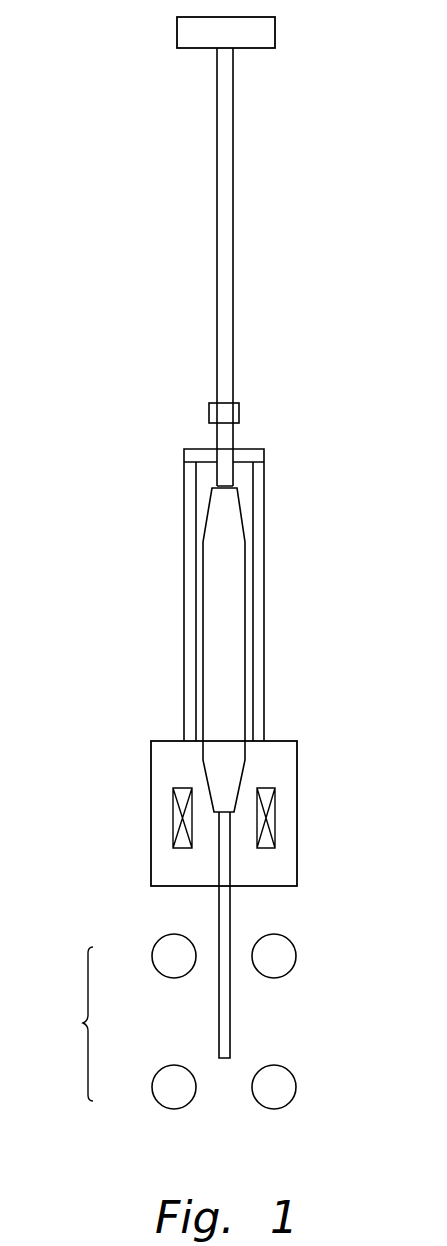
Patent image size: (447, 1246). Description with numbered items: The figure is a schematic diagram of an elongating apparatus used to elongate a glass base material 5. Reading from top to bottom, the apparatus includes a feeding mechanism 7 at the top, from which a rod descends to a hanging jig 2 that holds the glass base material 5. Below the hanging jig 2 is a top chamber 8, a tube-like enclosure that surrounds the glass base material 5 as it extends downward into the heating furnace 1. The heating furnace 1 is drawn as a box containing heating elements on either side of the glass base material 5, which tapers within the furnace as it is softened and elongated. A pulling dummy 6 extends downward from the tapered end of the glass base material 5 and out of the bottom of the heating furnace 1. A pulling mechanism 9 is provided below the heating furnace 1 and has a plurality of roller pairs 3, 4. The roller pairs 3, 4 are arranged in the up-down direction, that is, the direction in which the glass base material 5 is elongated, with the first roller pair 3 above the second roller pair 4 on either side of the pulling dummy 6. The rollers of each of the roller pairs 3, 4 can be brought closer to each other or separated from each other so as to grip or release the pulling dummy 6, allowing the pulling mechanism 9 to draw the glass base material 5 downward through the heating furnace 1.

The heating furnace 1 is at (151, 815).
The hanging jig 2 is at (209, 415).
The roller pair 3 is at (152, 956).
The roller pair 4 is at (152, 1087).
The glass base material 5 is at (203, 643).
The pulling dummy 6 is at (219, 910).
The feeding mechanism 7 is at (177, 33).
The top chamber 8 is at (184, 536).
The pulling mechanism 9 is at (177, 1021).